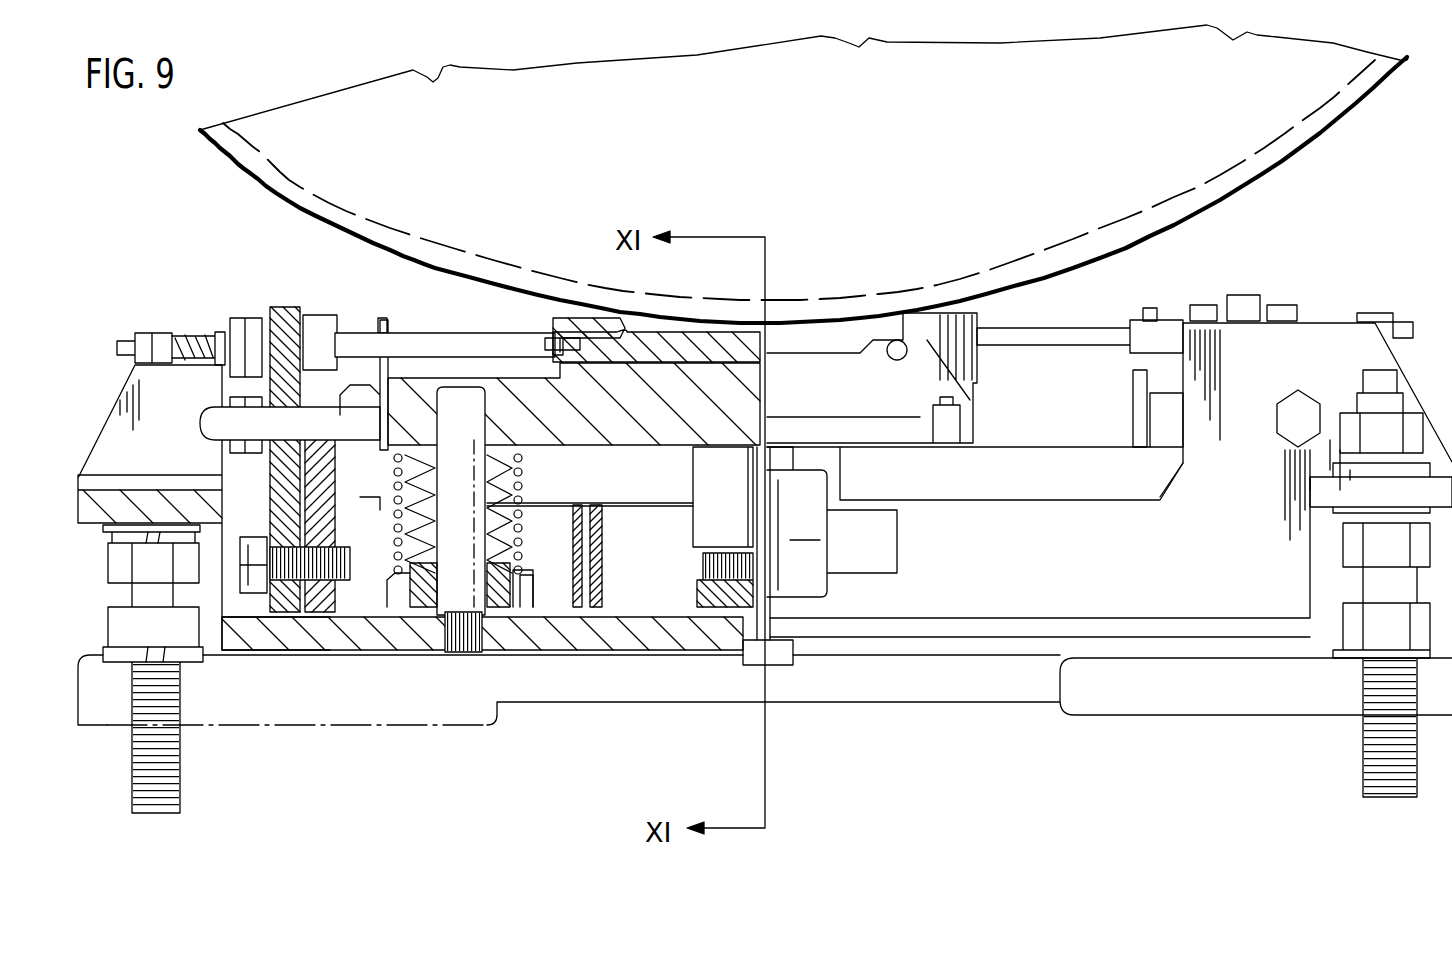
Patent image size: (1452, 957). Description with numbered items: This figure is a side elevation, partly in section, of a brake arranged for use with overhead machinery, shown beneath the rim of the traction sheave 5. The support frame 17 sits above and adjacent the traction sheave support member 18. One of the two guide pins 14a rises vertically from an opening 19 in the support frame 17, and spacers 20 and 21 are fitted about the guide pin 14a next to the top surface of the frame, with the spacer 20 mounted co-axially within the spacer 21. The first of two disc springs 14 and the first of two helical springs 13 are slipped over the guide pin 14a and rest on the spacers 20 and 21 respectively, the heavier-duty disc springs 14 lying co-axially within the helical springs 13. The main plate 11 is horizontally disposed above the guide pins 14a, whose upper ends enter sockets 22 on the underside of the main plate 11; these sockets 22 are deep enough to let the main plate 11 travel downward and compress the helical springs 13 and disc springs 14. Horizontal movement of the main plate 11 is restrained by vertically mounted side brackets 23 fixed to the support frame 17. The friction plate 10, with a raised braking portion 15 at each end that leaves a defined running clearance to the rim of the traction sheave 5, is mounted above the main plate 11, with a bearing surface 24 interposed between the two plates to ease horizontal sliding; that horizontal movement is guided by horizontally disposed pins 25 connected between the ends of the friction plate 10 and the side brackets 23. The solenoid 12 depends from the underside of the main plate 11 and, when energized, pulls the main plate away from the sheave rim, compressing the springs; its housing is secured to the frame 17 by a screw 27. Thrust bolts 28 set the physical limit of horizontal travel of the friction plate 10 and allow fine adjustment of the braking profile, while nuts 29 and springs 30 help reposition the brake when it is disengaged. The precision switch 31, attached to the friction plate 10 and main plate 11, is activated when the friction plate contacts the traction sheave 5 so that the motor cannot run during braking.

The traction sheave 5 is at (1260, 183).
The friction plate 10 is at (771, 357).
The main plate 11 is at (516, 380).
The solenoid 12 is at (710, 510).
The helical springs 13 is at (492, 540).
The disc springs 14 is at (520, 568).
The guide pins 14a is at (472, 493).
The braking portion 15 is at (551, 326).
The support frame 17 is at (688, 633).
The traction sheave support member 18 is at (457, 722).
The opening 19 is at (476, 653).
The spacer 20 is at (423, 606).
The spacer 21 is at (403, 606).
The sockets 22 is at (528, 445).
The side brackets 23 is at (307, 618).
The bearing surface 24 is at (733, 352).
The pins 25 is at (423, 333).
The screw 27 is at (781, 666).
The thrust bolts 28 is at (245, 316).
The nuts 29 is at (134, 333).
The springs 30 is at (188, 333).
The precision switch 31 is at (840, 590).